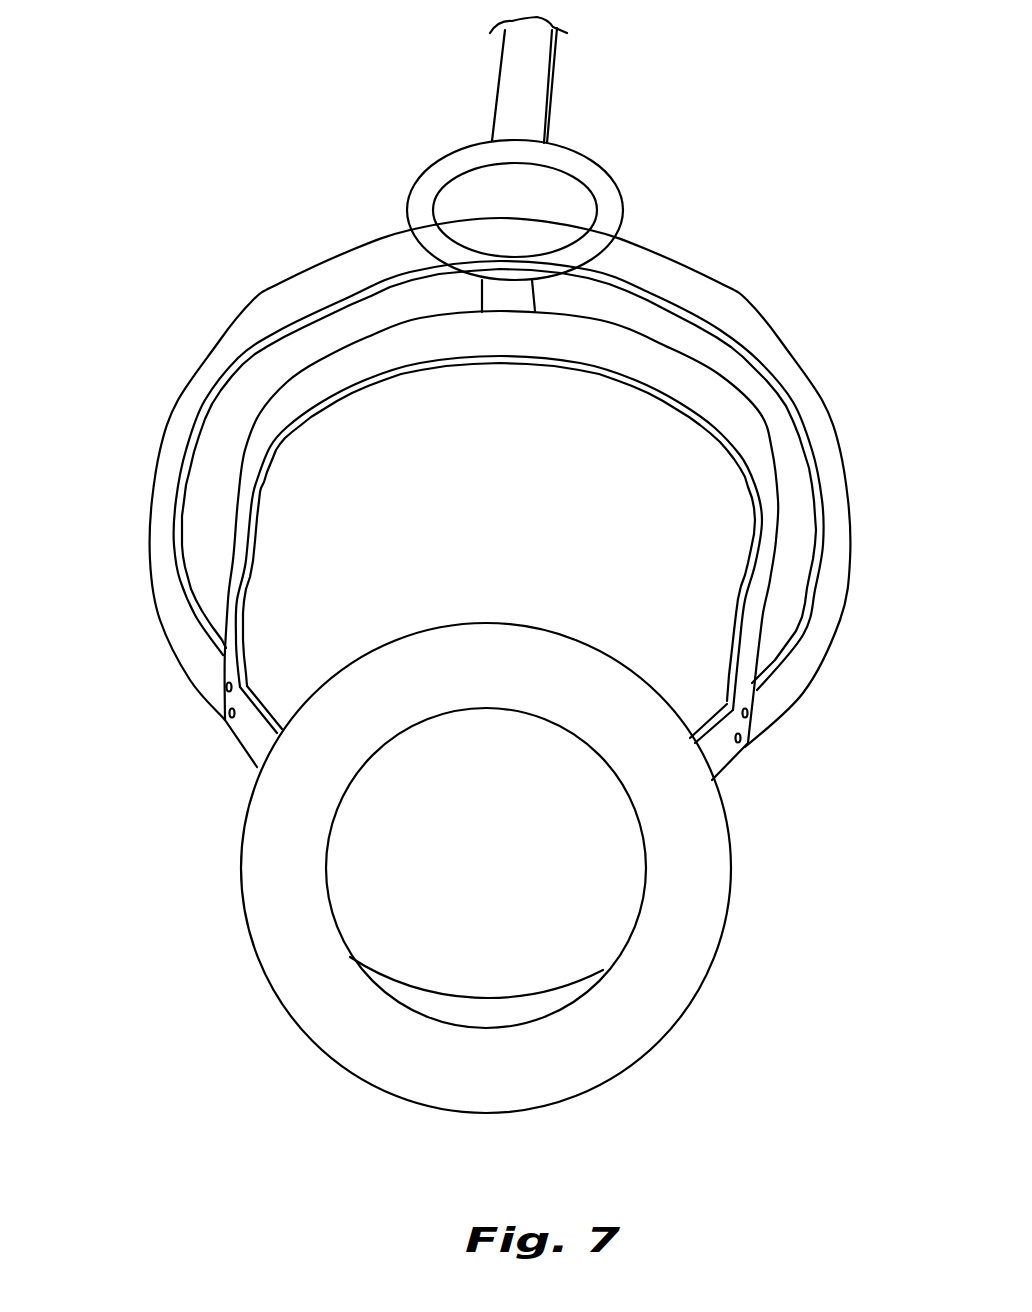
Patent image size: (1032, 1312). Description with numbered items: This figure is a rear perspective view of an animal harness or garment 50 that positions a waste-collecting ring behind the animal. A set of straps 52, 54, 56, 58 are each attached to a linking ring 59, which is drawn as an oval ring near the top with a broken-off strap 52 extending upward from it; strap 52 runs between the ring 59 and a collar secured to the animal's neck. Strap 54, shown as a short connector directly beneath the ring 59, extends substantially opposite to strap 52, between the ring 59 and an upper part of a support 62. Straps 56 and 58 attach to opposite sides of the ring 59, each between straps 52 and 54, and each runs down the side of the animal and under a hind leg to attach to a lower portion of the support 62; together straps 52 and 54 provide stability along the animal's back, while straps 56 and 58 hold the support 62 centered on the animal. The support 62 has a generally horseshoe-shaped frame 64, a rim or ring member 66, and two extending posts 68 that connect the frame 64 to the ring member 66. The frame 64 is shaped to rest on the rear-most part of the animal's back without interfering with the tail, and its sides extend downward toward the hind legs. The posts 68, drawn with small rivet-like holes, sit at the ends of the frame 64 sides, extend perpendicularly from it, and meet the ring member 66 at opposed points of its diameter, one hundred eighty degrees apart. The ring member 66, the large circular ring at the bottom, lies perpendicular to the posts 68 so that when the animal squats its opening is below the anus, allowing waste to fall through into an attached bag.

The harness or garment 50 is at (471, 565).
The strap 52 is at (518, 69).
The strap 54 is at (537, 292).
The strap 56 is at (797, 326).
The strap 58 is at (145, 448).
The linking ring 59 is at (622, 162).
The support 62 is at (790, 567).
The frame 64 is at (303, 388).
The ring member 66 is at (230, 904).
The posts 68 is at (240, 722).